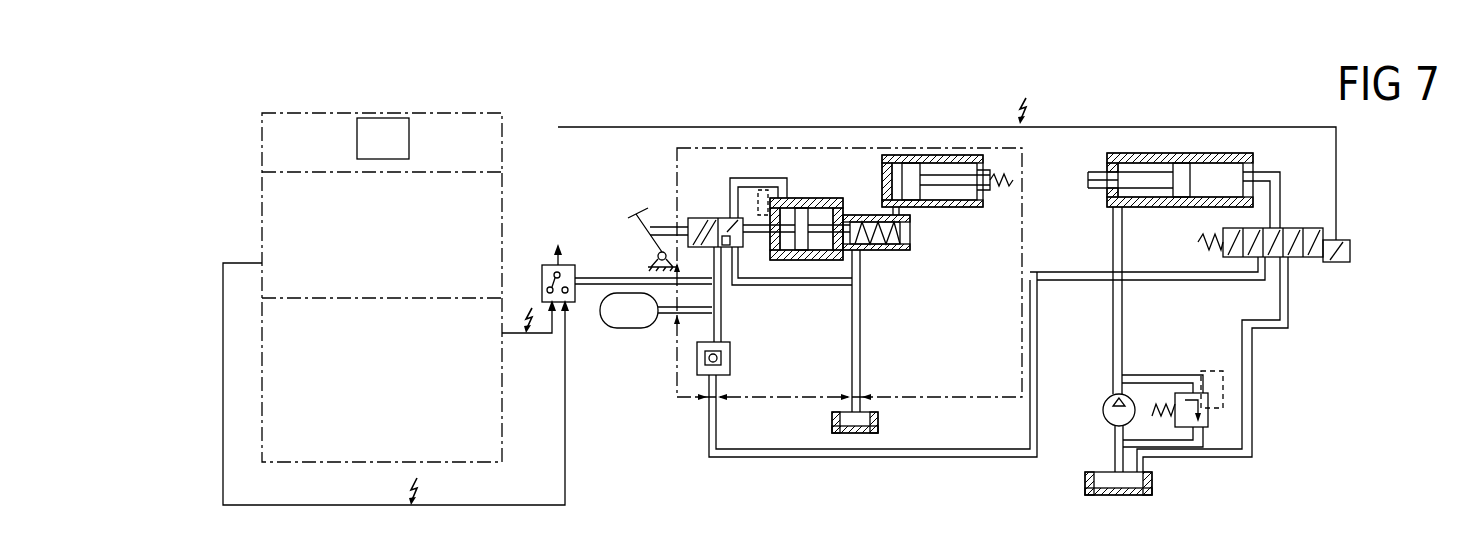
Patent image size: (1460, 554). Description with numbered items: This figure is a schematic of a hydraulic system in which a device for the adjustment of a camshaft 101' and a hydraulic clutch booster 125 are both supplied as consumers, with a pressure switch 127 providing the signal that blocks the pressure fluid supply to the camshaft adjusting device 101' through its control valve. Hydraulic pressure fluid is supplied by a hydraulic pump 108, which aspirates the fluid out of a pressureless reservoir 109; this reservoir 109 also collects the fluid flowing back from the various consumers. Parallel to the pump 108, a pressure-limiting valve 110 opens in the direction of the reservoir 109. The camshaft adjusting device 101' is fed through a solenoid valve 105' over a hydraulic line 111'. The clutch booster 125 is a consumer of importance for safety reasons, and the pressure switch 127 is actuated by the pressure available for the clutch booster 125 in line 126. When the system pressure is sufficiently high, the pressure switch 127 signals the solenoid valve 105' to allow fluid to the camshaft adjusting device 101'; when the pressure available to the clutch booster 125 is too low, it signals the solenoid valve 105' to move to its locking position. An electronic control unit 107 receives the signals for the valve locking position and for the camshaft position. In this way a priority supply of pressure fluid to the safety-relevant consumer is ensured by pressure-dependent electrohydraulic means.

The device for the adjustment of a camshaft 101' is at (998, 265).
The solenoid valve 105' is at (1273, 350).
The electronic controller 107 is at (262, 207).
The hydraulic pump 108 is at (1105, 398).
The pressureless reservoir 109 is at (1152, 484).
The pressure-limiting valve 110 is at (1193, 418).
The hydraulic line 111' is at (1153, 300).
The hydraulic clutch booster 125 is at (712, 205).
The line 126 is at (721, 293).
The pressure switch 127 is at (560, 266).